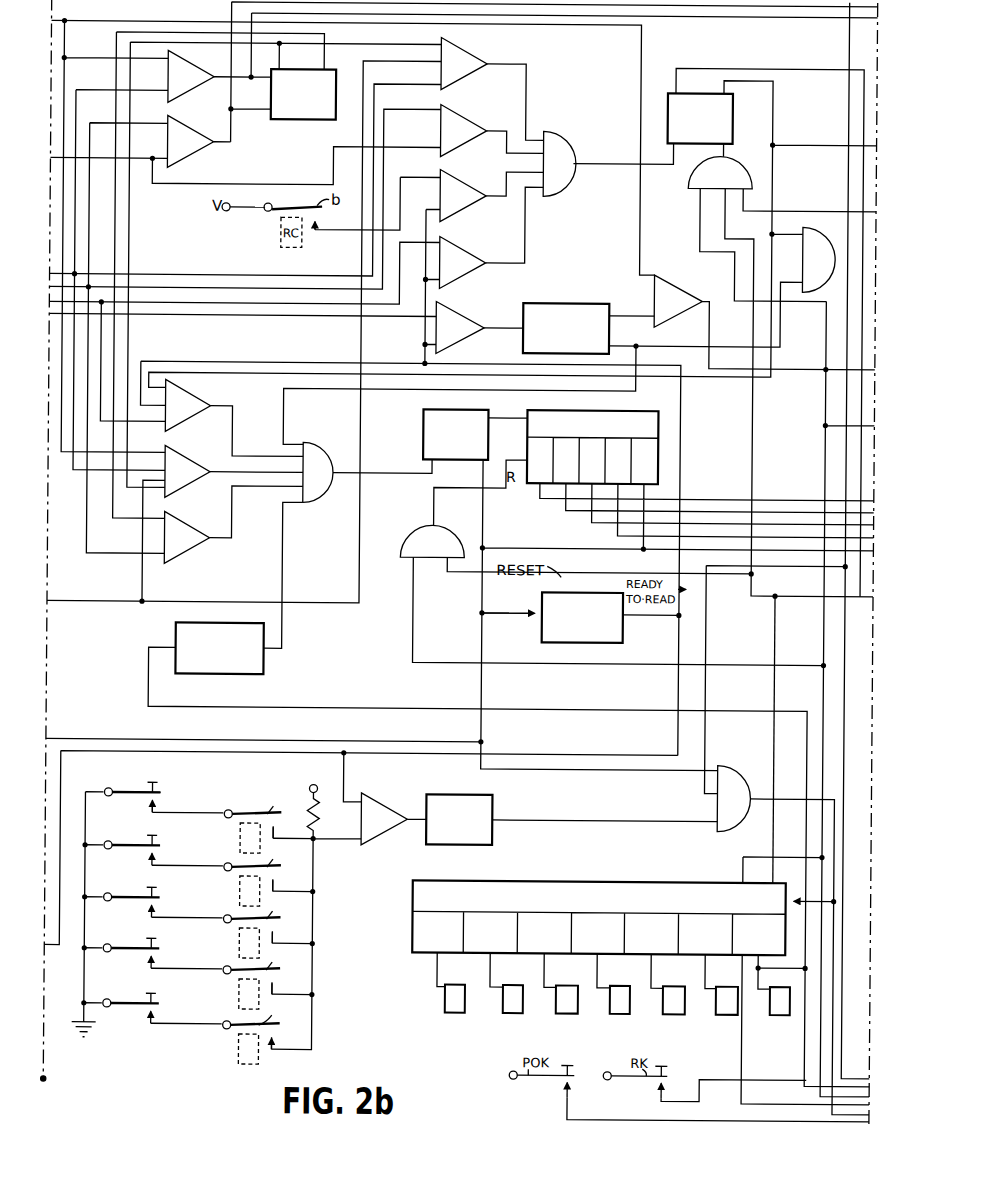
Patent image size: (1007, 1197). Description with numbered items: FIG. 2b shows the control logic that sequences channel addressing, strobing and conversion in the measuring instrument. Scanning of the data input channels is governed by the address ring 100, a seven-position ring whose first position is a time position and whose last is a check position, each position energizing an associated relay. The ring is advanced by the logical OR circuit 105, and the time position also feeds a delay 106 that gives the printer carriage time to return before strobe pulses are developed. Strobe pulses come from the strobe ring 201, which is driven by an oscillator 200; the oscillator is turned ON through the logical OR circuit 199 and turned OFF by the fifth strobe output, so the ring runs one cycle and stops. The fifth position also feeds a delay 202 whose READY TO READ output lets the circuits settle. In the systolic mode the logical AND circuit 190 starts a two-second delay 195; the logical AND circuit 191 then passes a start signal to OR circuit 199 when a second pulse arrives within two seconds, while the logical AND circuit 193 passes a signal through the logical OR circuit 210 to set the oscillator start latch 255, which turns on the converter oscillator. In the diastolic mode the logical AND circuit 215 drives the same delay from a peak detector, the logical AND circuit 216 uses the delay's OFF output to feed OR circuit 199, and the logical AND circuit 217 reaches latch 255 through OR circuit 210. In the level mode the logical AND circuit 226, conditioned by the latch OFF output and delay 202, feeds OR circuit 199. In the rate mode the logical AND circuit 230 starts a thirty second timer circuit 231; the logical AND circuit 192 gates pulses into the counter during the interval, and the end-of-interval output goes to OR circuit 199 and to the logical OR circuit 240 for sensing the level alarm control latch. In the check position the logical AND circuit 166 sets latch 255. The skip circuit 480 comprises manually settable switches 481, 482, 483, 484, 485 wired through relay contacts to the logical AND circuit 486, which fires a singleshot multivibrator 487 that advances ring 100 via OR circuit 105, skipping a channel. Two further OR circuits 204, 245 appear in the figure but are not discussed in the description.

The logical AND circuit 190 is at (199, 77).
The logical AND circuit 215 is at (197, 132).
The two-second delay 195 is at (312, 121).
The logical AND circuit 193 is at (480, 62).
The logical AND circuit 217 is at (474, 126).
The logical AND circuit 166 is at (473, 190).
The oscillator start latch 255 is at (474, 252).
The logical OR circuit 210 is at (559, 154).
The thirty second timer circuit 231 is at (538, 306).
The logical AND circuit 230 is at (479, 325).
The logical AND circuit 192 is at (692, 292).
The OR gate 245 is at (746, 170).
The logical OR circuit 240 is at (811, 232).
The logical AND circuit 226 is at (201, 404).
The logical AND circuit 191 is at (195, 468).
The logical AND circuit 216 is at (195, 531).
The logical OR circuit 199 is at (318, 456).
The oscillator 200 is at (422, 424).
The strobe ring 201 is at (574, 412).
The OR gate 204 is at (450, 537).
The delay 202 is at (623, 634).
The delay 106 is at (264, 675).
The skip circuit 480 is at (194, 911).
The manually settable switch 481 is at (127, 788).
The manually settable switch 482 is at (127, 841).
The manually settable switch 483 is at (128, 898).
The manually settable switch 484 is at (128, 949).
The manually settable switch 485 is at (140, 1005).
The logical AND circuit 486 is at (370, 806).
The singleshot multivibrator 487 is at (494, 804).
The address ring 100 is at (605, 887).
The logical OR circuit 105 is at (724, 770).